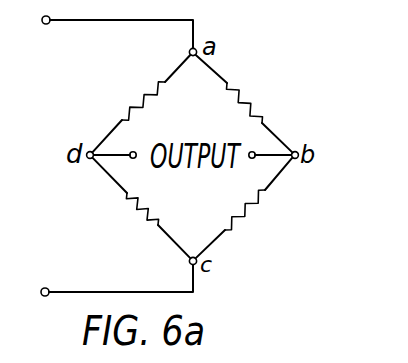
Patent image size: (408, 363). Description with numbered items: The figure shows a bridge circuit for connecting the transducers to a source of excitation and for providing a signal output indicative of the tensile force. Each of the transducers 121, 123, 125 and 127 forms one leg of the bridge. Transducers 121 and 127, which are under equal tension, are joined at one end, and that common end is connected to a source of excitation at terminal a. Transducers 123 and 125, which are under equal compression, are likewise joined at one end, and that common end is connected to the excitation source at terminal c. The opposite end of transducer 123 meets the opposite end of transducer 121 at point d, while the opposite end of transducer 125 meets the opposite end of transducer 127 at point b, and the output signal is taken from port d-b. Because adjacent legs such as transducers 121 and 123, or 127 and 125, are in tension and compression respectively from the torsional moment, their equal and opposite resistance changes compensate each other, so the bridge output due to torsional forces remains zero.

The transducer 121 is at (141, 104).
The transducer 123 is at (140, 208).
The transducer 125 is at (244, 207).
The transducer 127 is at (244, 104).